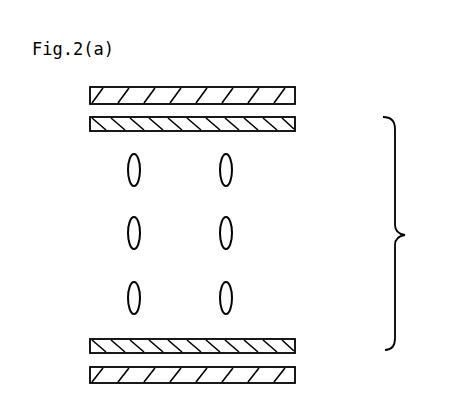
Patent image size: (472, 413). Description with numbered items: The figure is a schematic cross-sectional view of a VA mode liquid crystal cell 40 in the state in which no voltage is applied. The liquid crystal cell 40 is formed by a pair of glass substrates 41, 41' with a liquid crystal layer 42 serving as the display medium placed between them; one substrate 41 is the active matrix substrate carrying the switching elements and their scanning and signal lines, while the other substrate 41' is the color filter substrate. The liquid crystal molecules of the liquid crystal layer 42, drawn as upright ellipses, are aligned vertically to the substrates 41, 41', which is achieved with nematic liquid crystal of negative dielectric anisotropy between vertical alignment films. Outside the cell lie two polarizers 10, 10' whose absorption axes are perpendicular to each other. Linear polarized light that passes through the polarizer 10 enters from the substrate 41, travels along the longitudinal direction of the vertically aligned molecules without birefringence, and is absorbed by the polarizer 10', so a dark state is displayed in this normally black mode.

The polarizer 10' is at (233, 97).
The glass substrate 41' is at (233, 129).
The liquid crystal layer 42 is at (280, 240).
The glass substrate 41 is at (230, 347).
The polarizer 10 is at (230, 378).
The liquid crystal cell 40 is at (417, 233).